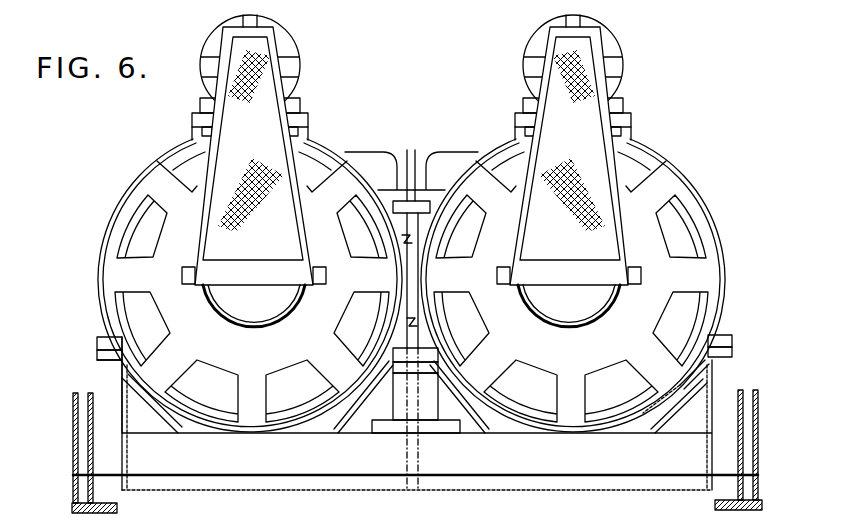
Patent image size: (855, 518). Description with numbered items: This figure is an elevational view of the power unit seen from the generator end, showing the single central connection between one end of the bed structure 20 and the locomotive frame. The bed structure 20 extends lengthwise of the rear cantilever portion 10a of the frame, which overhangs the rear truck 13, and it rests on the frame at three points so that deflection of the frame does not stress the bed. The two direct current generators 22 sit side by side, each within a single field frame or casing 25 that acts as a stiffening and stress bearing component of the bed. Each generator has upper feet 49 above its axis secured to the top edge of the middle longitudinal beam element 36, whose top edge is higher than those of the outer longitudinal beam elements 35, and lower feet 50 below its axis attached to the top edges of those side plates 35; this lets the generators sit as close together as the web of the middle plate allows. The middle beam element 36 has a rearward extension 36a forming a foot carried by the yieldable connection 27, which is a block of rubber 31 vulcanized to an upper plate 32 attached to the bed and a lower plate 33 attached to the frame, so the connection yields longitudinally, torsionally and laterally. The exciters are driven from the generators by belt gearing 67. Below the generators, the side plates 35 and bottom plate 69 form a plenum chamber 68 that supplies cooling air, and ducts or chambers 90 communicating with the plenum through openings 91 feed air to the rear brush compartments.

The rear cantilever portion of the frame 10a is at (75, 470).
The rear truck 13 is at (540, 465).
The bed structure 20 is at (120, 372).
The direct current generator 22 is at (175, 151).
The field frame or casing 25 is at (133, 182).
The yieldable connection structure 27 is at (437, 365).
The block of rubber 31 is at (428, 373).
The upper plate 32 is at (402, 353).
The lower plate 33 is at (402, 375).
The outer longitudinal plate or beam element 35 is at (122, 390).
The middle longitudinal plate or beam element 36 is at (412, 255).
The rearward extension 36a is at (412, 340).
The upper feet 49 is at (428, 192).
The lower feet 50 is at (98, 333).
The belt gearing 67 is at (268, 328).
The plenum chamber 68 is at (640, 482).
The bottom plate 69 is at (318, 490).
The ducts or chambers 90 is at (172, 417).
The openings 91 is at (700, 387).